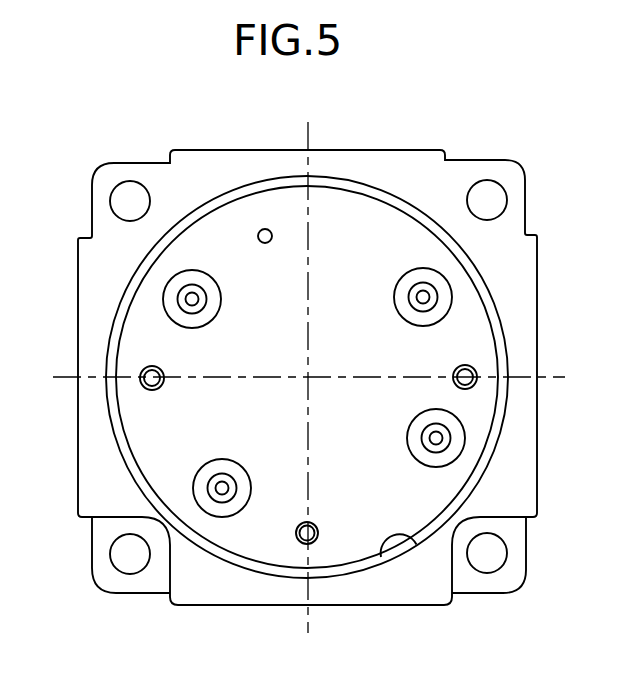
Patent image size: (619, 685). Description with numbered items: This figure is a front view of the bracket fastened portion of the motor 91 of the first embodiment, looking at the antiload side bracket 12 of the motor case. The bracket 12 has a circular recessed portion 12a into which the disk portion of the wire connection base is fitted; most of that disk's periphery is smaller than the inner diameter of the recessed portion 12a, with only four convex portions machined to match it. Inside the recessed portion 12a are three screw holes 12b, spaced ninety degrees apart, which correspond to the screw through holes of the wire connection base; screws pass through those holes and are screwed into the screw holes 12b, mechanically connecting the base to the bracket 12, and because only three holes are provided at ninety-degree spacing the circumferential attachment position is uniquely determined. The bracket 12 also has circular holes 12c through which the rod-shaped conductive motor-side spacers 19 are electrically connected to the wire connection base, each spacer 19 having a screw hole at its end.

The motor 91 is at (473, 123).
The antiload side bracket 12 is at (392, 160).
The circular recessed portion 12a is at (417, 542).
The screw holes 12b is at (140, 373).
The circular holes 12c is at (207, 271).
The motor-side spacer 19 is at (190, 292).